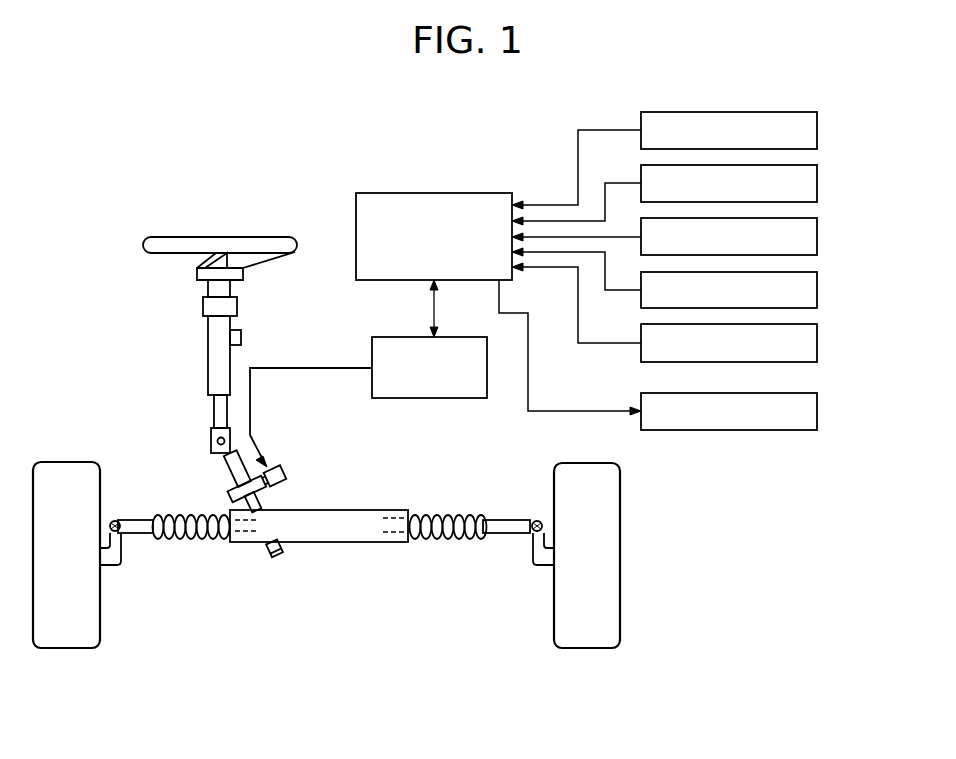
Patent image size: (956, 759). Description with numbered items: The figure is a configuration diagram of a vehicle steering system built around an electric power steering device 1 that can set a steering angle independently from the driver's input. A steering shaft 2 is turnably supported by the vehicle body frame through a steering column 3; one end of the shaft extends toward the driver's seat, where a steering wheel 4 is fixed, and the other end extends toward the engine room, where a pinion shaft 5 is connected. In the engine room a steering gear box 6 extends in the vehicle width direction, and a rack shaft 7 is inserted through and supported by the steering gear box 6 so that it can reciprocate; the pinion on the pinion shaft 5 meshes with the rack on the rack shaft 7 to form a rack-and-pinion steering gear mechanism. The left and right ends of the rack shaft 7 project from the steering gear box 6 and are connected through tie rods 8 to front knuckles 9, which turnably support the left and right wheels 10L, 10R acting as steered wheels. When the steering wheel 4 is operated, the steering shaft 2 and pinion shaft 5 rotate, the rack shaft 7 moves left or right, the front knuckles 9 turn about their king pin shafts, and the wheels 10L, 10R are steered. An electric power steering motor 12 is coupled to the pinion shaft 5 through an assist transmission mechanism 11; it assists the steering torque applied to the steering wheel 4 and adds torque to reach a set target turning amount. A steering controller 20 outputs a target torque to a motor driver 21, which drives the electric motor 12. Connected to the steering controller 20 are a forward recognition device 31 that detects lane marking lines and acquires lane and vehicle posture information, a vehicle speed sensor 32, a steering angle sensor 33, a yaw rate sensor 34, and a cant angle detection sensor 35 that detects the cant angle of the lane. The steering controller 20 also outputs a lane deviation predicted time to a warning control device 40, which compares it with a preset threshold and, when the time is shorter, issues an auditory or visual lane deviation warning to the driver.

The electric power steering device 1 is at (123, 390).
The steering shaft 2 is at (214, 415).
The steering column 3 is at (208, 351).
The steering wheel 4 is at (222, 237).
The pinion shaft 5 is at (232, 476).
The steering gear box 6 is at (343, 543).
The rack shaft 7 is at (393, 518).
The tie rods 8 is at (144, 533).
The front knuckles 9 is at (113, 565).
The right wheel 10R is at (65, 650).
The left wheel 10L is at (590, 650).
The assist transmission mechanism 11 is at (228, 495).
The electric power steering motor 12 is at (284, 470).
The steering controller 20 is at (437, 193).
The motor driver 21 is at (468, 337).
The forward recognition device 31 is at (817, 130).
The vehicle speed sensor 32 is at (817, 183).
The steering angle sensor 33 is at (817, 237).
The yaw rate sensor 34 is at (817, 290).
The cant angle detection sensor 35 is at (817, 343).
The warning control device 40 is at (817, 411).